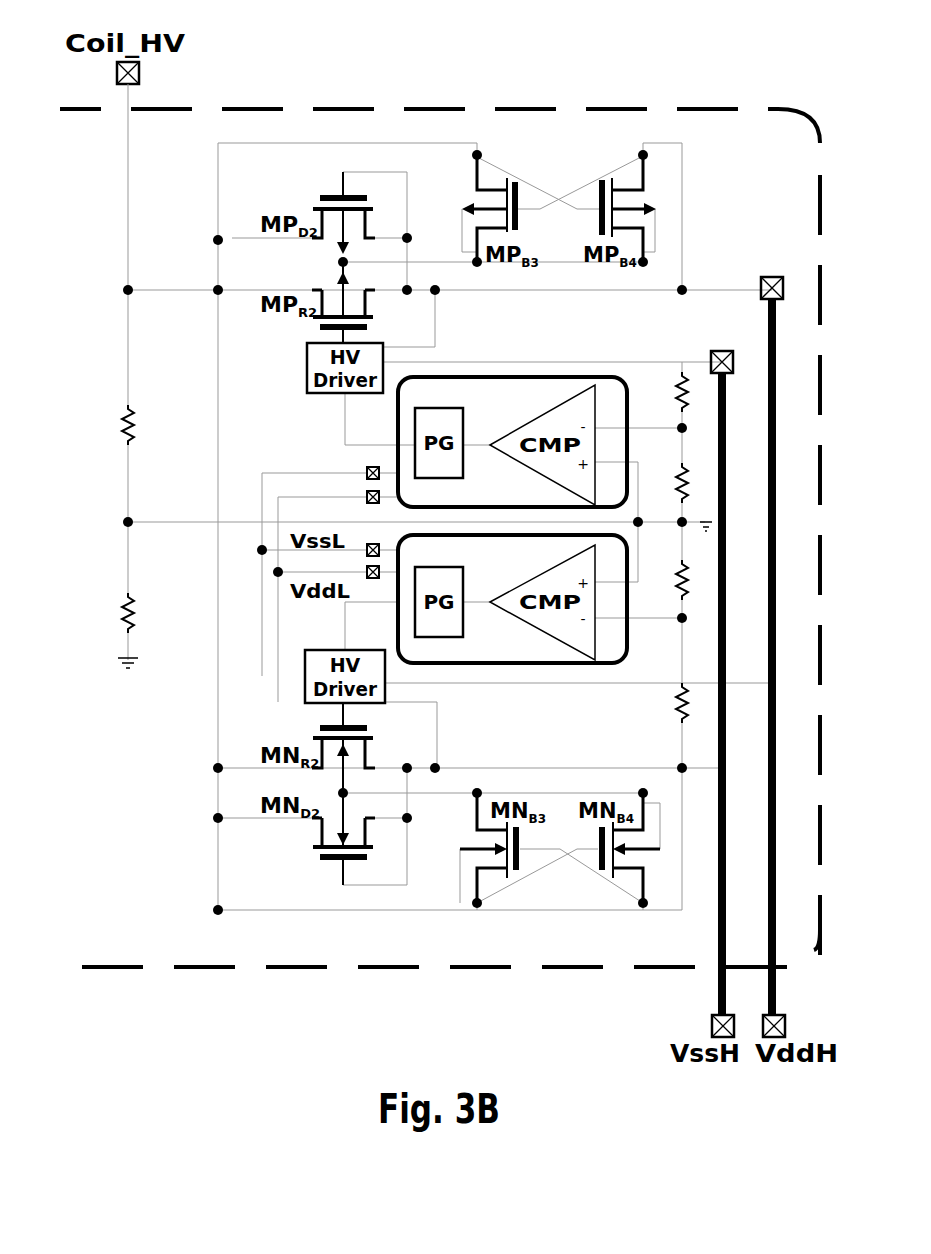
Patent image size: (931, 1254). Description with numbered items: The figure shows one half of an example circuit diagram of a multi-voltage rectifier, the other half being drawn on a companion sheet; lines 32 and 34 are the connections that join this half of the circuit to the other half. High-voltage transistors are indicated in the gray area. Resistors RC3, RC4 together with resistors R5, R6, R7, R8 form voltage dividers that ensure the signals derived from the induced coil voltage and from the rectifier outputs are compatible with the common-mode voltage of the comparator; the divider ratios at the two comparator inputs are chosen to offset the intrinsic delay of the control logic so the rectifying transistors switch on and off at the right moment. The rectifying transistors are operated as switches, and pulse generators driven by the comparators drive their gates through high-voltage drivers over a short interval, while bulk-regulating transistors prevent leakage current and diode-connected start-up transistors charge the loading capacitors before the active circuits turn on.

The line 32 is at (262, 676).
The line 34 is at (278, 702).
The resistor R5 is at (669, 392).
The resistor R6 is at (669, 483).
The resistor R7 is at (669, 703).
The resistor R8 is at (669, 580).
The resistor RC3 is at (108, 425).
The resistor RC4 is at (108, 613).